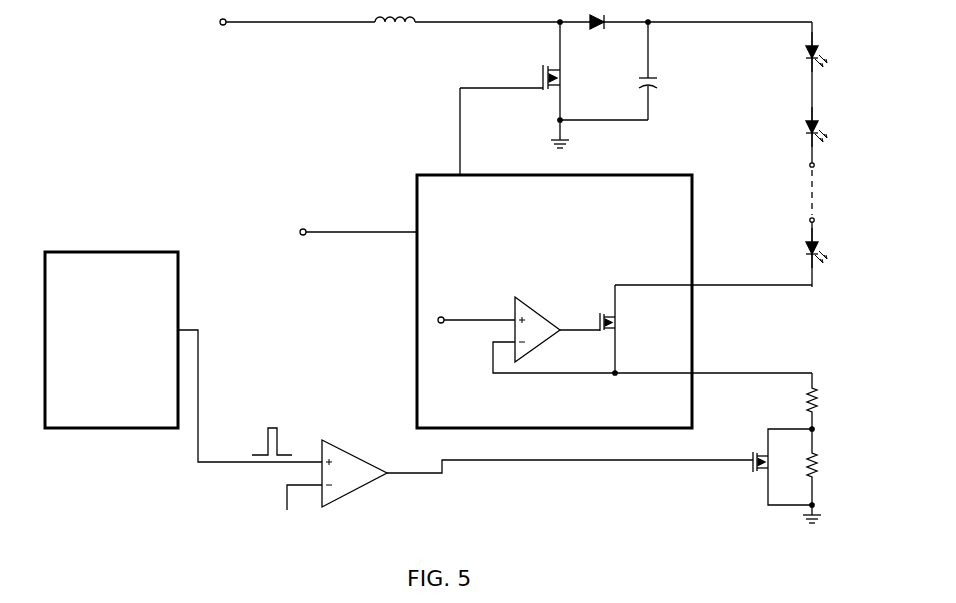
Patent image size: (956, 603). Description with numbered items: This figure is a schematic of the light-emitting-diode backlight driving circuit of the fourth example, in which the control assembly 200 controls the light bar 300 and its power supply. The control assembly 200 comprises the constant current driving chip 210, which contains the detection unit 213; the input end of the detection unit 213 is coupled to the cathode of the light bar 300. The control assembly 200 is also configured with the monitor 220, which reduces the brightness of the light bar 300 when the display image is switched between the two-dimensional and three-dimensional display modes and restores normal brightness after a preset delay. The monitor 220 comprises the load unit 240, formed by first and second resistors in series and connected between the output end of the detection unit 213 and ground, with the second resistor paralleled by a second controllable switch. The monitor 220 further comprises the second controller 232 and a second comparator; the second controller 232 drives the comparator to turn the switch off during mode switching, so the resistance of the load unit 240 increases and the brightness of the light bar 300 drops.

The control assembly 200 is at (245, 222).
The constant current driving chip 210 is at (563, 240).
The detection unit 213 is at (462, 357).
The monitor 220 is at (245, 385).
The second controller 232 is at (123, 346).
The load unit 240 is at (798, 478).
The LED light bar 300 is at (782, 200).